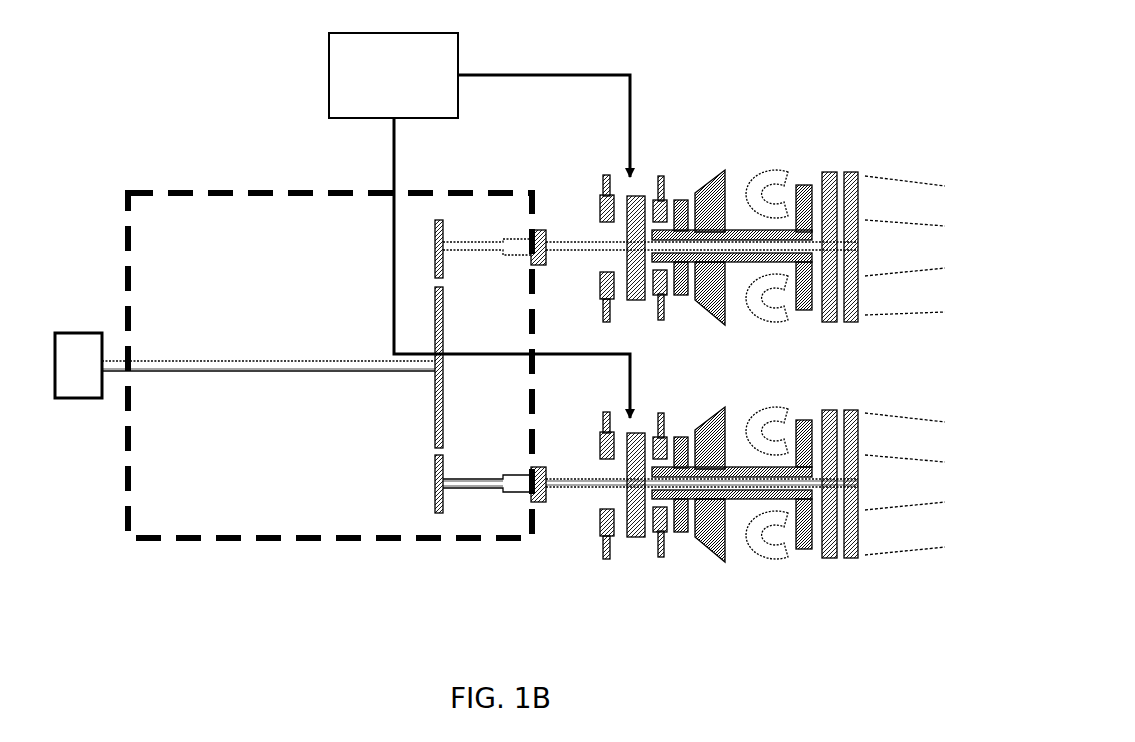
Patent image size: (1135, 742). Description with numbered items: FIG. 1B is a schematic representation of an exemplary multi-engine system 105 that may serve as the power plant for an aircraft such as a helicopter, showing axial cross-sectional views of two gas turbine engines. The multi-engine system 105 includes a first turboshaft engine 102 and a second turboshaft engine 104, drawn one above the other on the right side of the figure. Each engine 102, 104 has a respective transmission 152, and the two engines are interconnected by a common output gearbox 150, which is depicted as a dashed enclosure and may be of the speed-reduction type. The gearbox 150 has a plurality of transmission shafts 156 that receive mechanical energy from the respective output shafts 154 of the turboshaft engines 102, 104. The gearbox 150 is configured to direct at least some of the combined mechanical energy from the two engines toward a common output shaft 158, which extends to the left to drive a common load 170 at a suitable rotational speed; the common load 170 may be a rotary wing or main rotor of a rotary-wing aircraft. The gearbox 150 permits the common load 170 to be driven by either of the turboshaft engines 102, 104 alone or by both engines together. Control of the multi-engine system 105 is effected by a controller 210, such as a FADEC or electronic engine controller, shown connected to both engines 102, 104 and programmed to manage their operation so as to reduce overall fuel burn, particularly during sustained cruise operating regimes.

The first turboshaft engine 102 is at (795, 135).
The second turboshaft engine 104 is at (795, 595).
The multi-engine system 105 is at (178, 135).
The common output gearbox 150 is at (300, 540).
The transmission 152 is at (520, 268).
The output shaft 154 is at (543, 330).
The transmission shaft 156 is at (475, 240).
The common output shaft 158 is at (120, 372).
The common load 170 is at (80, 333).
The controller 210 is at (479, 225).